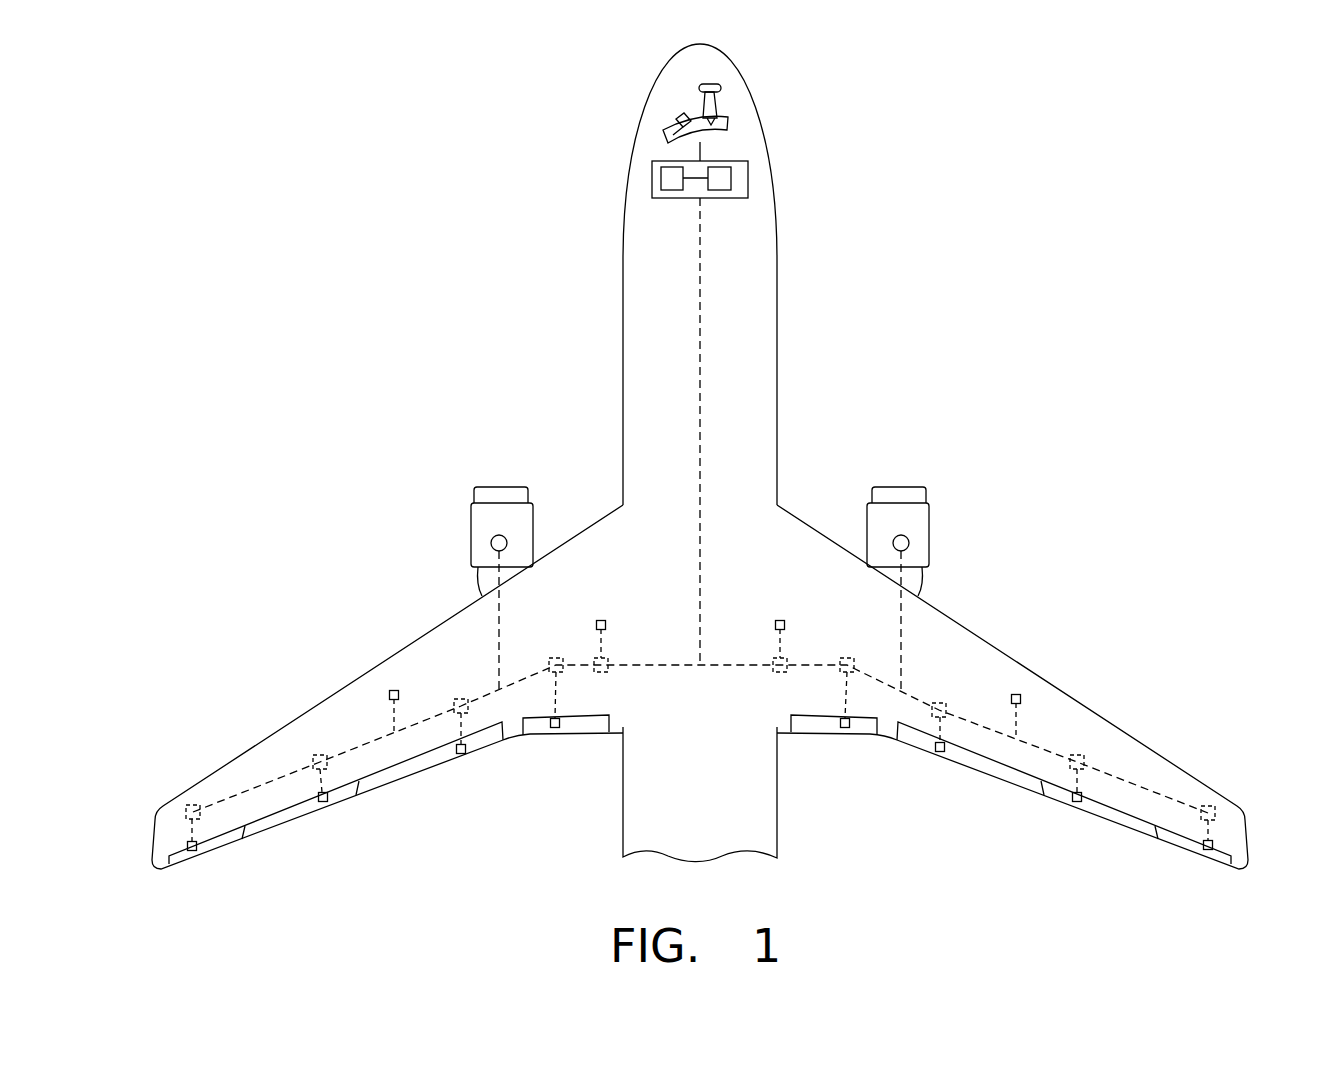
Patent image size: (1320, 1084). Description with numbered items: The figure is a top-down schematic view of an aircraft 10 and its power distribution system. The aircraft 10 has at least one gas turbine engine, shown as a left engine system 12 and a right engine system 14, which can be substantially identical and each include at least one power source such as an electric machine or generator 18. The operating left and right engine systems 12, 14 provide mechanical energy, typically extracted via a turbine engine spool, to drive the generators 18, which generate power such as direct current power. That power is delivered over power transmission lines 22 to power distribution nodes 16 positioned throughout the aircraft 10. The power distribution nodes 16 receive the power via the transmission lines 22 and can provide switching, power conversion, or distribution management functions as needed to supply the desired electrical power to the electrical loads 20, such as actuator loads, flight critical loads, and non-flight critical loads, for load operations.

The aircraft 10 is at (405, 263).
The left engine system 12 is at (503, 498).
The right engine system 14 is at (900, 497).
The power distribution nodes 16 is at (562, 672).
The generator 18 is at (508, 538).
The electrical loads 20 is at (672, 190).
The power transmission lines 22 is at (700, 325).